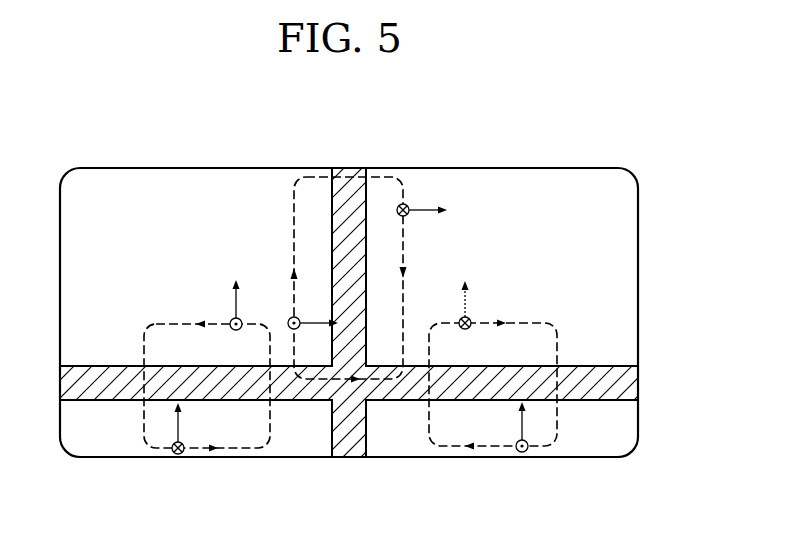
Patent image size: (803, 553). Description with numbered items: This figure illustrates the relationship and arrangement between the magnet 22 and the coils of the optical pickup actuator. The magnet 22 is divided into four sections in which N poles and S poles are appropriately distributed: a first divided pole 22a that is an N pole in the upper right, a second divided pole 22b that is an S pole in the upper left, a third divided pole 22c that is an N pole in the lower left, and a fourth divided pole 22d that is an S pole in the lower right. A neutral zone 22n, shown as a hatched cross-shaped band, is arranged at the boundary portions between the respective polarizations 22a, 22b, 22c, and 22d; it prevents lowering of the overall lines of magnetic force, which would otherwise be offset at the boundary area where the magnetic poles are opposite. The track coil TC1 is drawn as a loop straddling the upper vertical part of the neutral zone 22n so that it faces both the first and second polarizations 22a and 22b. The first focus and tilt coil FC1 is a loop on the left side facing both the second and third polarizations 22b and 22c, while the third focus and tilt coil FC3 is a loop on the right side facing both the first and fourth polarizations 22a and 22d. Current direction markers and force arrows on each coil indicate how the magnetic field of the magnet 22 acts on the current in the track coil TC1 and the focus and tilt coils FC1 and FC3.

The magnet 22 is at (440, 152).
The first divided pole 22a is at (543, 180).
The second divided pole 22b is at (150, 183).
The third divided pole 22c is at (93, 450).
The fourth divided pole 22d is at (608, 448).
The neutral zone 22n is at (632, 375).
The track coil TC1 is at (292, 183).
The first focus and tilt coil FC1 is at (158, 449).
The third focus and tilt coil FC3 is at (443, 448).